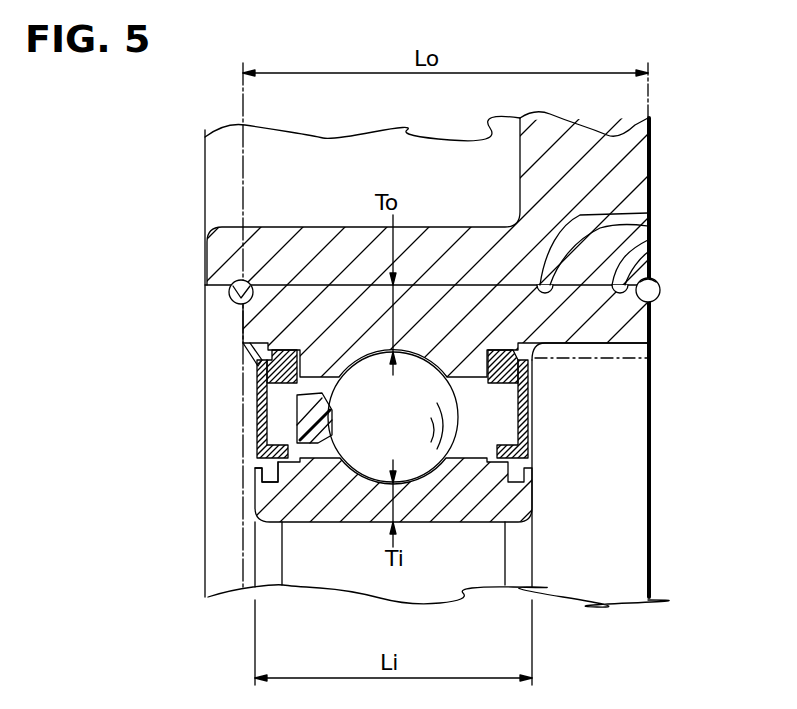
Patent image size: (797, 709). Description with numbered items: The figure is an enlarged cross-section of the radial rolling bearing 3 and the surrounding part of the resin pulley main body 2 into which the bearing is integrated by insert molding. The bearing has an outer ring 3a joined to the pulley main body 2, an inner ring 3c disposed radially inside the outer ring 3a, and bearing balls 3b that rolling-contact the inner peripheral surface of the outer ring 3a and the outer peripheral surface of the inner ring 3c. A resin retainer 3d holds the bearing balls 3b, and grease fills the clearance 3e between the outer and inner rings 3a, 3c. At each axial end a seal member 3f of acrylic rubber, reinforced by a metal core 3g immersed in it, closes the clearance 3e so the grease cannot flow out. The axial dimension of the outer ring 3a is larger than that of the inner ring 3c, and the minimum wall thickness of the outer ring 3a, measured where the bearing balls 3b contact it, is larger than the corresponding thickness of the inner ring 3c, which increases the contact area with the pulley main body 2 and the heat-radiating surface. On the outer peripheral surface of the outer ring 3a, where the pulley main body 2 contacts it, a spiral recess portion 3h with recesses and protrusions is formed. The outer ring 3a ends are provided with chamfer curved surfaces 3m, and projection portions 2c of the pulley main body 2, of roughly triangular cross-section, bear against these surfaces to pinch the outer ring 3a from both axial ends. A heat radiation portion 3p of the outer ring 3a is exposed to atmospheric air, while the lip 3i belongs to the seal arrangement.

The pulley main body 2 is at (607, 163).
The projection portion 2c is at (229, 290).
The radial rolling bearing 3 is at (587, 278).
The outer ring 3a is at (655, 316).
The bearing ball 3b is at (426, 462).
The inner ring 3c is at (455, 510).
The retainer 3d is at (257, 454).
The clearance 3e is at (490, 427).
The seal member 3f is at (255, 363).
The metal core 3g is at (257, 418).
The spiral recess portion 3h is at (652, 214).
The outer seal lip 3i is at (232, 340).
The chamfer curved surface 3m is at (228, 280).
The heat radiation portion 3p is at (655, 350).